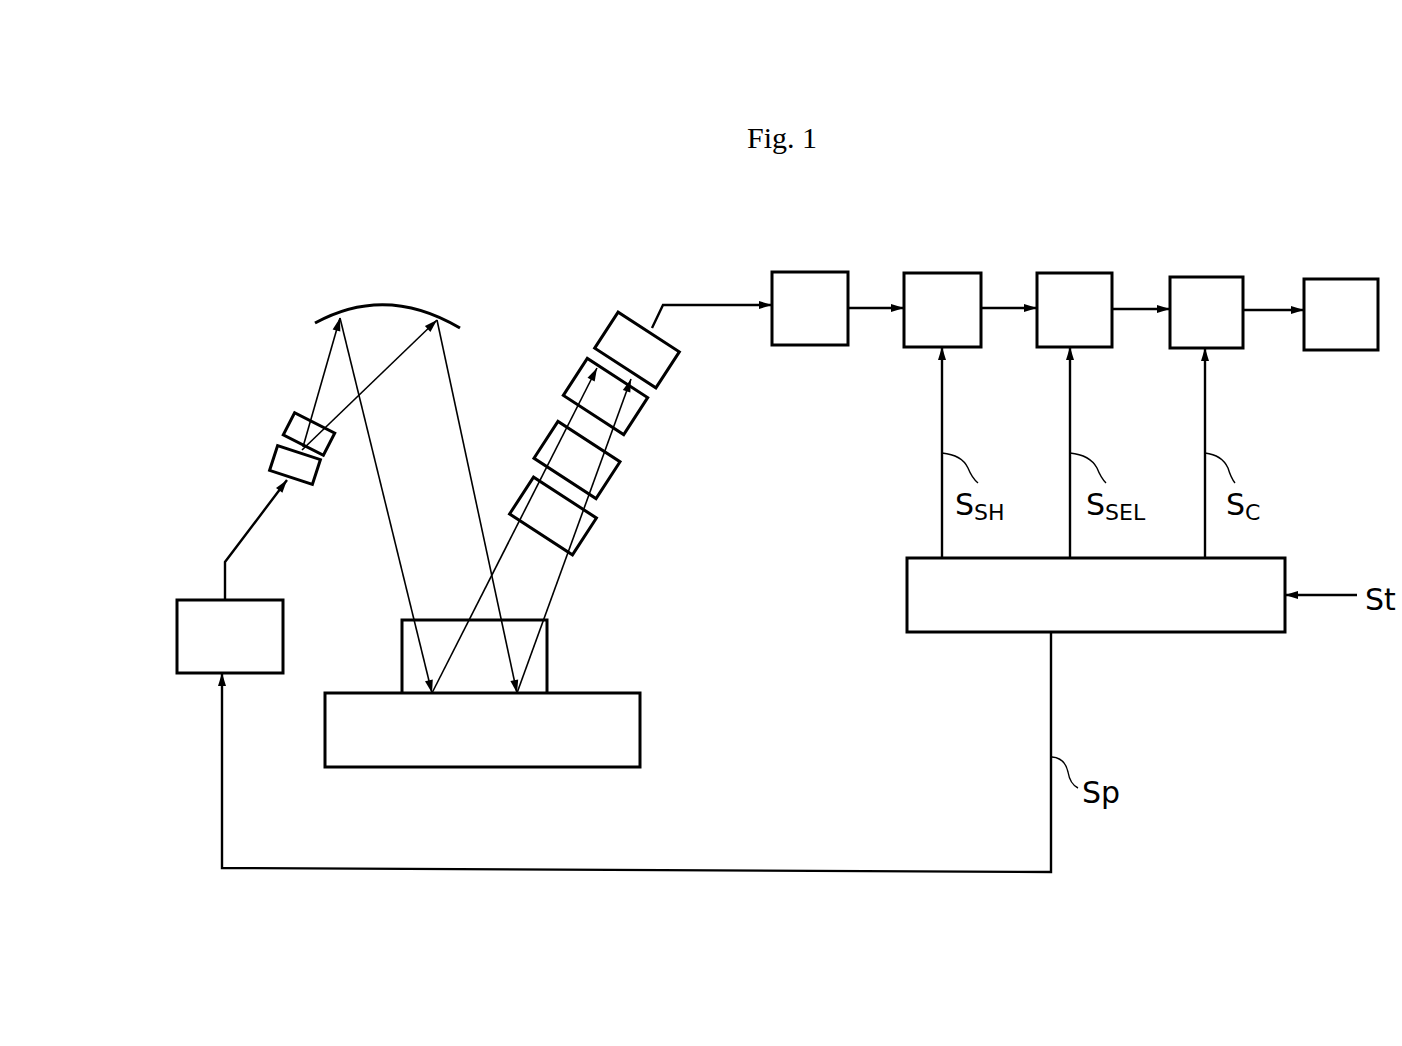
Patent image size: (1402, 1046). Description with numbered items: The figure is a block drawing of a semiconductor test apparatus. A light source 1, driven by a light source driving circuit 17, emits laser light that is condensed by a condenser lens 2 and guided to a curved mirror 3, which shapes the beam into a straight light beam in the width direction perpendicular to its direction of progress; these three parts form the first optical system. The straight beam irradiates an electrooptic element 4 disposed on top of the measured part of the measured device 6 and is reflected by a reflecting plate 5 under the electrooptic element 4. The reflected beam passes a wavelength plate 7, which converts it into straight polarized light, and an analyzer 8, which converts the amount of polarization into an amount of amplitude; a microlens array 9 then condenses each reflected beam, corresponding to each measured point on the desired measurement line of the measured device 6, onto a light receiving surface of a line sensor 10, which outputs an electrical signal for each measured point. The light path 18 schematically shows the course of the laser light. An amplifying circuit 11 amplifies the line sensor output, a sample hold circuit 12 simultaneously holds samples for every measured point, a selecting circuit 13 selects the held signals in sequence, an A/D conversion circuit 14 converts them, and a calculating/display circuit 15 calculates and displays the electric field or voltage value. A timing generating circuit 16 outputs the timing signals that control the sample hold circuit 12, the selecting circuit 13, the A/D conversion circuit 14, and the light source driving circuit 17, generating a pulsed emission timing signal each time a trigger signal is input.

The light source 1 is at (271, 458).
The condenser lens 2 is at (292, 425).
The curved mirror 3 is at (375, 306).
The electrooptic element 4 is at (546, 661).
The reflecting plate 5 is at (418, 692).
The measured device 6 is at (631, 733).
The wavelength plate 7 is at (590, 533).
The analyzer 8 is at (611, 480).
The microlens array 9 is at (641, 417).
The line sensor 10 is at (605, 332).
The amplifying circuit 11 is at (822, 345).
The sample hold circuit 12 is at (930, 273).
The selecting circuit 13 is at (1062, 273).
The A/D conversion circuit 14 is at (1197, 277).
The calculating/display circuit 15 is at (1325, 279).
The timing generating circuit 16 is at (1153, 632).
The light source driving circuit 17 is at (210, 600).
The light path 18 is at (557, 592).